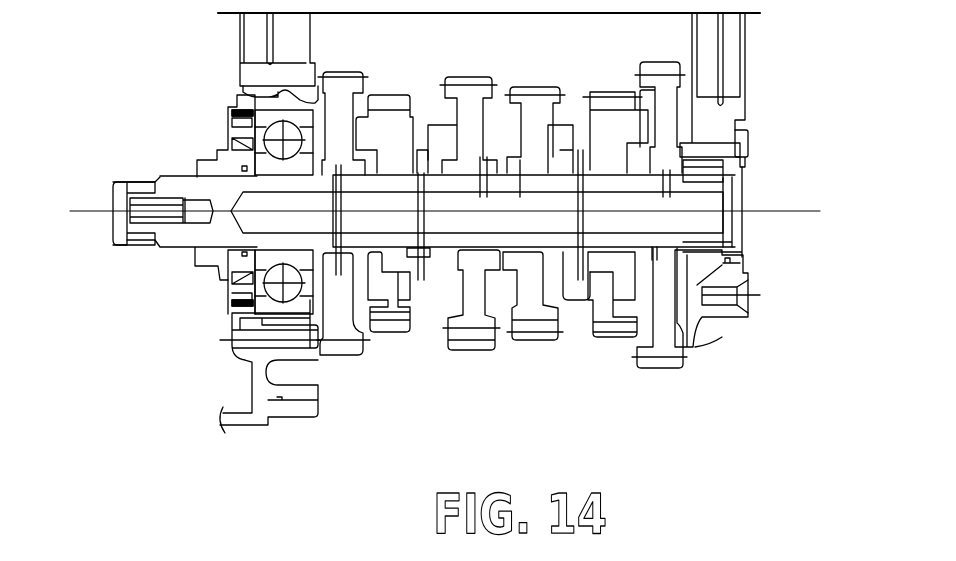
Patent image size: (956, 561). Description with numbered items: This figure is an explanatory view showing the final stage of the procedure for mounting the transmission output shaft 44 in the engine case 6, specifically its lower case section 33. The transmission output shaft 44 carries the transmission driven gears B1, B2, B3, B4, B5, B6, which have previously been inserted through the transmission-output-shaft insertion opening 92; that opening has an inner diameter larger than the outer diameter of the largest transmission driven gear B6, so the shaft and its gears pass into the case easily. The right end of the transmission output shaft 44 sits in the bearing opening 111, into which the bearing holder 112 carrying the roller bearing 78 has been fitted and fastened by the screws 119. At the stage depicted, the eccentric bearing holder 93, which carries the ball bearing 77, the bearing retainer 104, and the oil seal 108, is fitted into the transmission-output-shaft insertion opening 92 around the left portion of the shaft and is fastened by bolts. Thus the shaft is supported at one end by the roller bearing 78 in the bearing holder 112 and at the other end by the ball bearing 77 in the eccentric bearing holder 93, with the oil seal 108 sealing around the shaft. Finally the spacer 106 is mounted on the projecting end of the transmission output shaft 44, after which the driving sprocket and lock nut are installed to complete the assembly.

The engine case 6 is at (218, 49).
The lower case section 33 is at (240, 32).
The eccentric bearing holder 93 is at (257, 97).
The ball bearing 77 is at (272, 136).
The transmission output shaft 44 is at (135, 183).
The transmission-output-shaft insertion opening 92 is at (320, 103).
The bearing holder 112 is at (749, 147).
The roller bearing 78 is at (744, 192).
The spacer 106 is at (195, 258).
The oil seal 108 is at (228, 290).
The bearing retainer 104 is at (227, 312).
The bearing opening 111 is at (743, 256).
The screws 119 is at (750, 305).
The transmission driven gear B1 is at (345, 358).
The transmission driven gear B2 is at (400, 335).
The transmission driven gear B3 is at (473, 352).
The transmission driven gear B4 is at (537, 342).
The transmission driven gear B5 is at (612, 340).
The transmission driven gear B6 is at (660, 370).